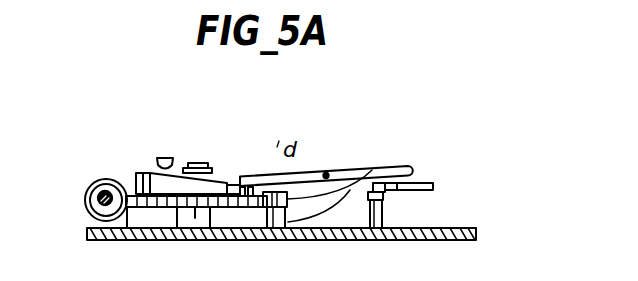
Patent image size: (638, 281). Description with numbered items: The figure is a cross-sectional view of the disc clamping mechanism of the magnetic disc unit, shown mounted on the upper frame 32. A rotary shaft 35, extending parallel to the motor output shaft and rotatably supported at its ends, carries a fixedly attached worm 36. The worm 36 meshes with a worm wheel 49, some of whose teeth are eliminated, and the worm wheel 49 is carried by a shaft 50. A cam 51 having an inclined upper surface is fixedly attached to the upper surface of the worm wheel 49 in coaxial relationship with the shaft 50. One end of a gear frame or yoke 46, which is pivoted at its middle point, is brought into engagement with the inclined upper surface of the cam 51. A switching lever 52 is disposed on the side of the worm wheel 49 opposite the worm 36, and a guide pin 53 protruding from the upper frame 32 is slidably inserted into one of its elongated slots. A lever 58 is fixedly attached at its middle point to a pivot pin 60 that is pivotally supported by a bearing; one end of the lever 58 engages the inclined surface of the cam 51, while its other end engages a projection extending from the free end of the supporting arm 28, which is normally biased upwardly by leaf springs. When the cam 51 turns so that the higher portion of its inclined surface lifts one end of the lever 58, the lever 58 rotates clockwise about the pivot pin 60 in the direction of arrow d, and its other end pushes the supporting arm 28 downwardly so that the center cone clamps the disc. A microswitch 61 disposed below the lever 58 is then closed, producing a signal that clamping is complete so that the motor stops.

The supporting arm 28 is at (432, 183).
The upper frame 32 is at (88, 228).
The rotary shaft 35 is at (96, 195).
The worm 36 is at (100, 185).
The gear frame or yoke 46 is at (165, 157).
The worm wheel 49 is at (137, 175).
The shaft 50 is at (197, 163).
The cam 51 is at (222, 178).
The switching lever 52 is at (350, 190).
The guide pin 53 is at (372, 170).
The lever 58 is at (310, 172).
The pivot pin 60 is at (328, 173).
The microswitch 61 is at (383, 222).